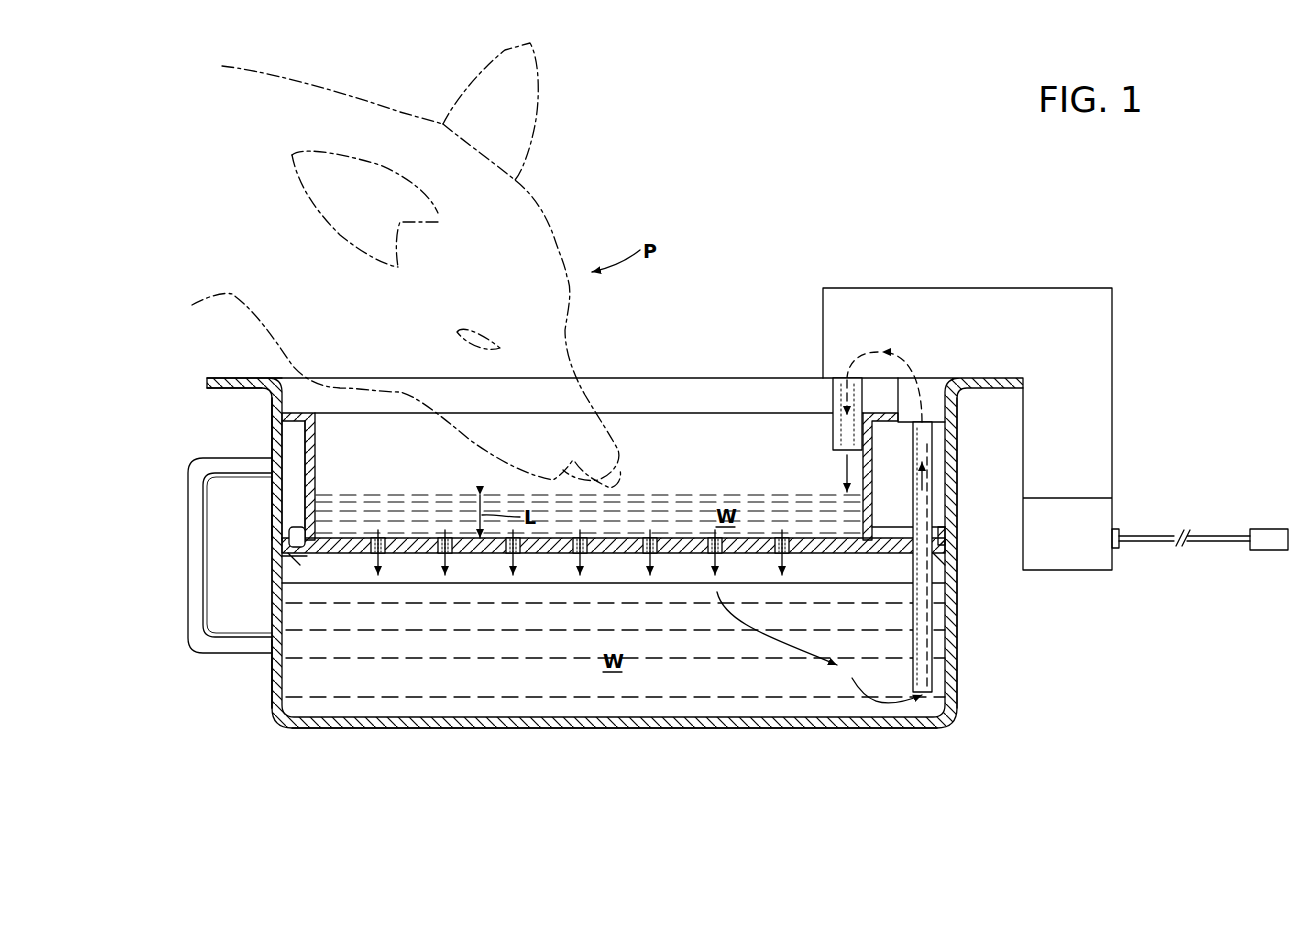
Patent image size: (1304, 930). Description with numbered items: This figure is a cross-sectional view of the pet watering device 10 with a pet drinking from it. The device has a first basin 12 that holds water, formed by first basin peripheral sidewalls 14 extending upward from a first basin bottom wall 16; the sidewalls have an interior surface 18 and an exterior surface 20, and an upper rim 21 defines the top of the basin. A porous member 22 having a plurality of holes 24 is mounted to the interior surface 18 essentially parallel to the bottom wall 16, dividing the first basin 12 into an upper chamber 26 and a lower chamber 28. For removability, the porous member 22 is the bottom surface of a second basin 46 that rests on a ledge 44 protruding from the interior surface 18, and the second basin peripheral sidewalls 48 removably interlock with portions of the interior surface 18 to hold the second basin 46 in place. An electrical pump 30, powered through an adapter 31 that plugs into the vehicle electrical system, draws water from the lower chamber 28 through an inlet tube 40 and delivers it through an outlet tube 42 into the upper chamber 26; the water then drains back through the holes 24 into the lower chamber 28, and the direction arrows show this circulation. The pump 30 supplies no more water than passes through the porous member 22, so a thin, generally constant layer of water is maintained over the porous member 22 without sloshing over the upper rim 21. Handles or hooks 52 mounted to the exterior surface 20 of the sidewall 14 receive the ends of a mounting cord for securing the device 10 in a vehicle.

The pet watering device 10 is at (998, 650).
The first basin 12 is at (268, 418).
The first basin peripheral sidewalls 14 is at (278, 600).
The first basin bottom wall 16 is at (585, 728).
The interior surface 18 is at (283, 626).
The exterior surface 20 is at (271, 668).
The upper rim 21 is at (284, 392).
The porous member 22 is at (414, 540).
The plurality of holes 24 is at (380, 562).
The upper chamber 26 is at (689, 459).
The lower chamber 28 is at (532, 670).
The electrical pump 30 is at (1095, 328).
The adapter 31 is at (1218, 534).
The inlet tube 40 is at (934, 688).
The outlet tube 42 is at (833, 425).
The ledge 44 is at (280, 560).
The second basin 46 is at (303, 452).
The second basin peripheral sidewalls 48 is at (316, 462).
The handles or hooks 52 is at (190, 545).